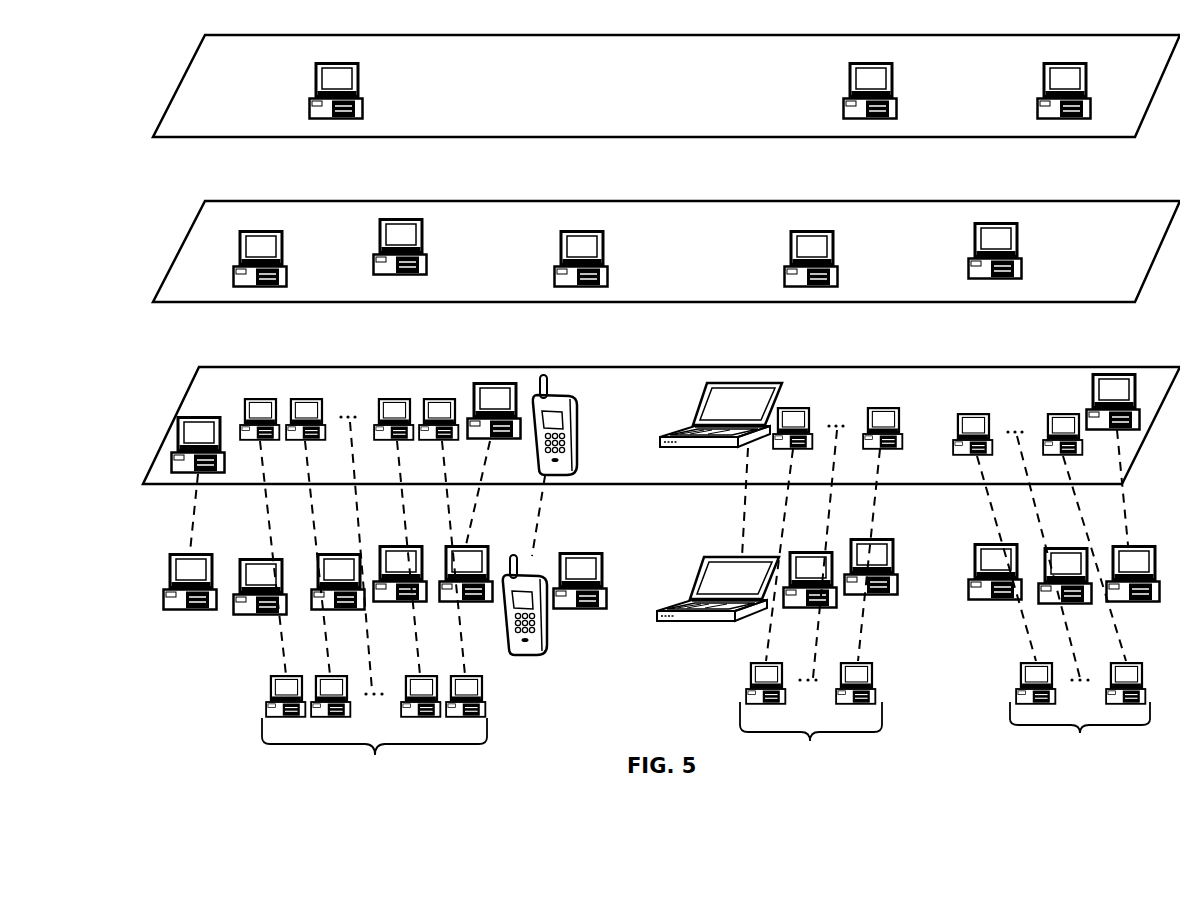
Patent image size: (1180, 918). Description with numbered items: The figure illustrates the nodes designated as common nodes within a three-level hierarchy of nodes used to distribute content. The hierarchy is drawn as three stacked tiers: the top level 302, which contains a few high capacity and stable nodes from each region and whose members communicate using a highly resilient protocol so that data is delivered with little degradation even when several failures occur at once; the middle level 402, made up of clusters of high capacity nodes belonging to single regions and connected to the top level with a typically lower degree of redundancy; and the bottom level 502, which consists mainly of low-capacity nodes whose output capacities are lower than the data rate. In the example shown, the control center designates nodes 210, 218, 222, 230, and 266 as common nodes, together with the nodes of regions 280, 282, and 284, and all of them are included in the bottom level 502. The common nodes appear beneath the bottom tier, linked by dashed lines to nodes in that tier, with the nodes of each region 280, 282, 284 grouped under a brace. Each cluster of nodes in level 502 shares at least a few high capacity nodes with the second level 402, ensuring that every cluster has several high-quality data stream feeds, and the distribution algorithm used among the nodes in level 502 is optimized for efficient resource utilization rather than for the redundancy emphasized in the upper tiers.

The top level of three-level hierarchy of nodes 302 is at (413, 138).
The middle level of three-level hierarchy of nodes 402 is at (478, 303).
The bottom level of three-level hierarchy of nodes 502 is at (279, 367).
The node 210 is at (170, 612).
The node 218 is at (463, 604).
The node 222 is at (520, 657).
The node 230 is at (680, 627).
The node 266 is at (1130, 603).
The region of nodes 280 is at (374, 729).
The region of nodes 282 is at (811, 716).
The region of nodes 284 is at (1080, 712).